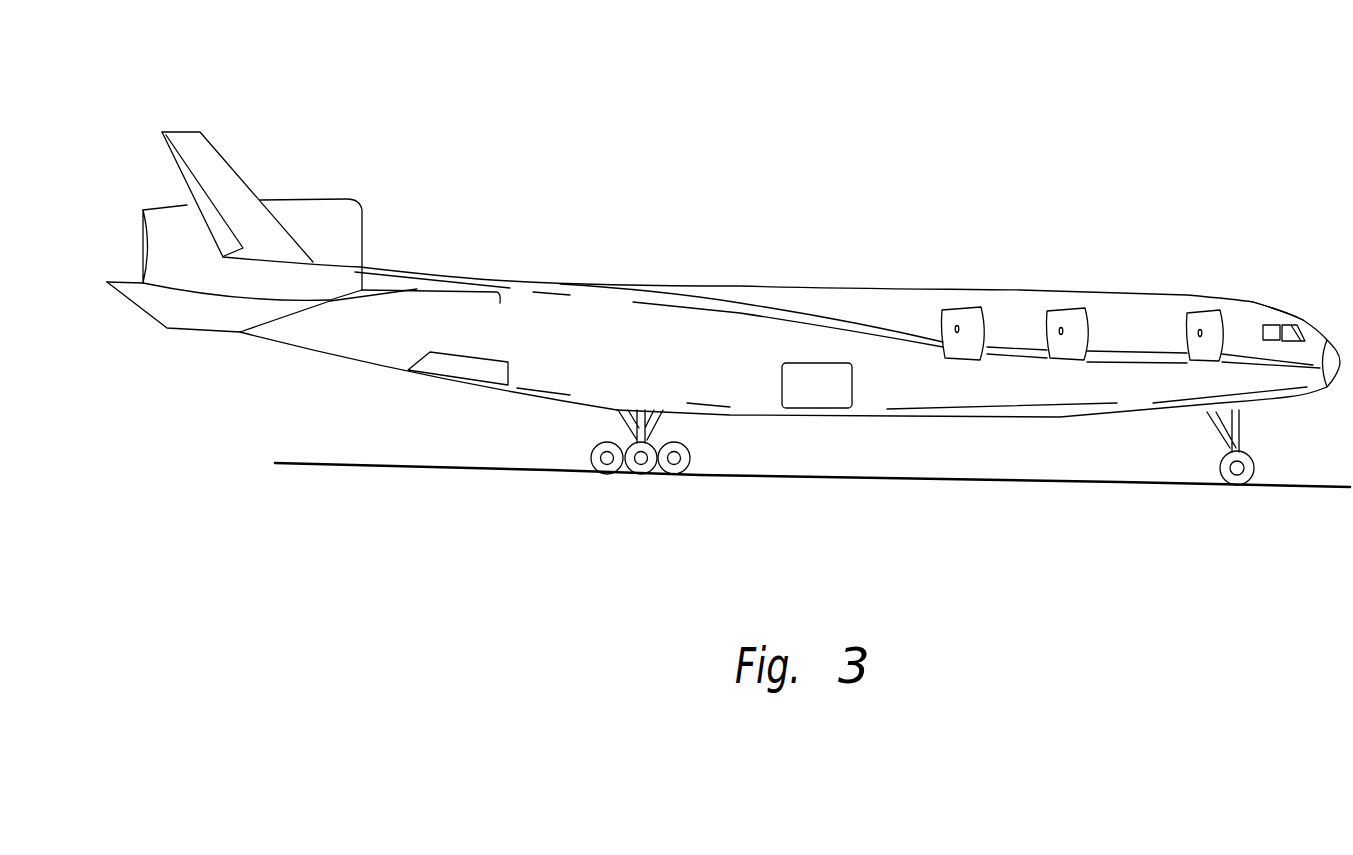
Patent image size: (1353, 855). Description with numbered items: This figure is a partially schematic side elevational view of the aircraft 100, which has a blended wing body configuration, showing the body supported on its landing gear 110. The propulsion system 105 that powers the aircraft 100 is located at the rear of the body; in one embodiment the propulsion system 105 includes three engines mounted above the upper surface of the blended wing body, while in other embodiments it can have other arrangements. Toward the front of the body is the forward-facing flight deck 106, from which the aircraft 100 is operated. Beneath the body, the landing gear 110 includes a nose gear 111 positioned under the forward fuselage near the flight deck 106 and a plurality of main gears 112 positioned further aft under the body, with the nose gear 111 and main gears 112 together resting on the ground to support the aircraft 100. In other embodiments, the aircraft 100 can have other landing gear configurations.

The aircraft 100 is at (723, 281).
The tail section (empennage with engine) 105 is at (362, 160).
The cockpit / flight deck 106 is at (1278, 310).
The ground surface 110 is at (1080, 502).
The nose landing gear 111 is at (1210, 463).
The main landing gear 112 is at (592, 453).